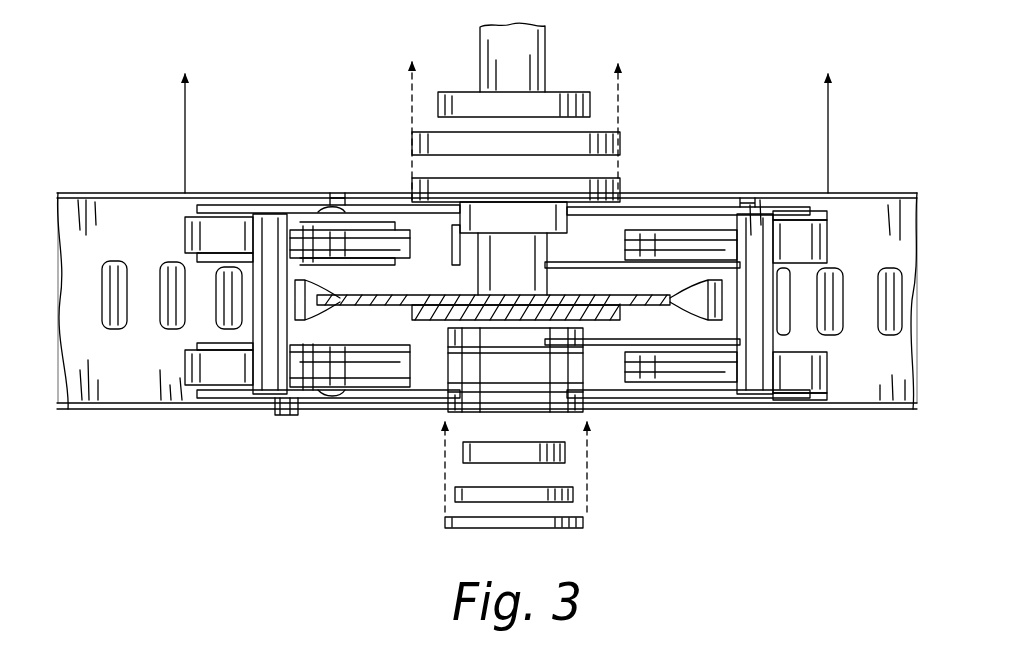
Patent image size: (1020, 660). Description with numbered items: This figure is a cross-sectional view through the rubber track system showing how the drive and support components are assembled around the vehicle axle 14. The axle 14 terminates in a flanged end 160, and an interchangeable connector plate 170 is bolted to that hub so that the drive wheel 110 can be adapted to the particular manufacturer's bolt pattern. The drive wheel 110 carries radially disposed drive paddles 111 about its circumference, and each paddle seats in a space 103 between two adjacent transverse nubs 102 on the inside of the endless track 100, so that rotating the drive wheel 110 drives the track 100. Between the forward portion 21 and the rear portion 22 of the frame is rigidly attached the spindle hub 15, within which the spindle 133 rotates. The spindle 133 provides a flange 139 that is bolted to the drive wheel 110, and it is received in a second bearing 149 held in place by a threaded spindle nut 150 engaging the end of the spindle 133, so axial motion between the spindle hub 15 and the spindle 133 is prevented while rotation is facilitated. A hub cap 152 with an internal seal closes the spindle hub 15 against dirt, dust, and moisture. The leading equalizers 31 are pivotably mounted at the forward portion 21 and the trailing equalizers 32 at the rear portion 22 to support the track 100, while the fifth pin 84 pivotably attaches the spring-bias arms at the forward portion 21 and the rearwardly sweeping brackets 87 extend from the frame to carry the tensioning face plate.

The axle 14 is at (540, 42).
The spindle hub 15 is at (478, 414).
The forward portion 21 is at (262, 236).
The rear portion 22 is at (745, 243).
The leading equalizers 31 is at (183, 206).
The trailing equalizers 32 is at (817, 215).
The fifth pin 84 is at (310, 222).
The rearwardly sweeping brackets 87 is at (338, 226).
The track 100 is at (77, 363).
The transverse nubs 102 is at (143, 328).
The space 103 is at (140, 240).
The drive wheel 110 is at (398, 300).
The drive paddles 111 is at (345, 306).
The spindle 133 is at (628, 186).
The flange 139 is at (610, 178).
The second bearing 149 is at (566, 452).
The threaded spindle nut 150 is at (574, 494).
The hub cap 152 is at (584, 522).
The flanged end 160 is at (554, 96).
The connector plates 170 is at (598, 133).